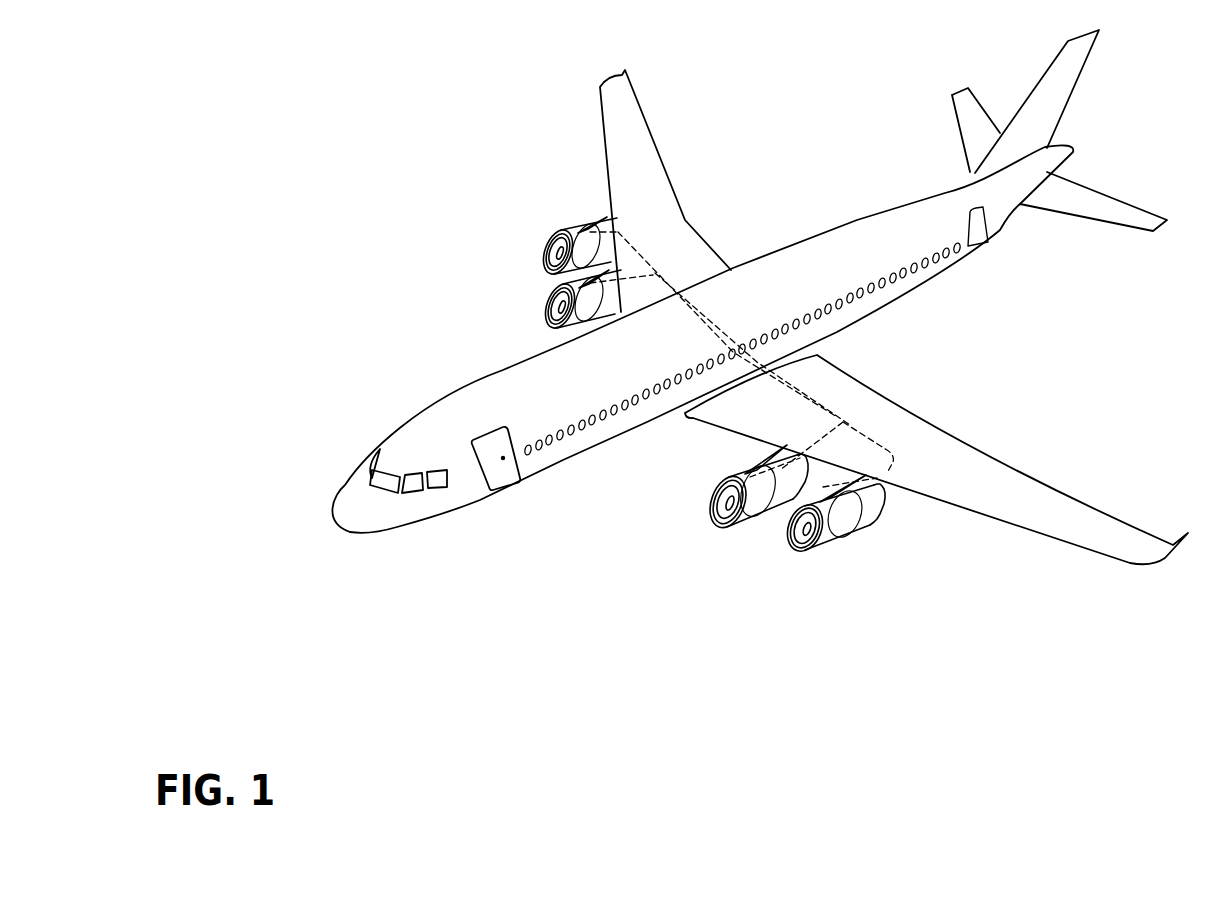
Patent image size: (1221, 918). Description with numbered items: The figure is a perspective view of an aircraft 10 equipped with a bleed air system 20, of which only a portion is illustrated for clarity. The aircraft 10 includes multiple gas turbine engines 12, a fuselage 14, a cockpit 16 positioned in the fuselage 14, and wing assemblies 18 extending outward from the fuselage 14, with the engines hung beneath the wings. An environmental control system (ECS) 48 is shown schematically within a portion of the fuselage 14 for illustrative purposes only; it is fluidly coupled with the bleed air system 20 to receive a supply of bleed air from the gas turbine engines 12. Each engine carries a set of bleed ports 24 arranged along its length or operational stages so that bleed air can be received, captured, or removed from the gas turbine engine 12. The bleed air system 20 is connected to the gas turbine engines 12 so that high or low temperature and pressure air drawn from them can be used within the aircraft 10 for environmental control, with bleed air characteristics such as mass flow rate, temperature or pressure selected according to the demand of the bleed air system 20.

The aircraft 10 is at (353, 397).
The gas turbine engines 12 is at (565, 228).
The fuselage 14 is at (772, 252).
The cockpit 16 is at (433, 467).
The wing assemblies 18 is at (618, 113).
The bleed air system 20 is at (850, 418).
The set of bleed ports 24 is at (577, 213).
The environmental control system (ECS) 48 is at (703, 312).